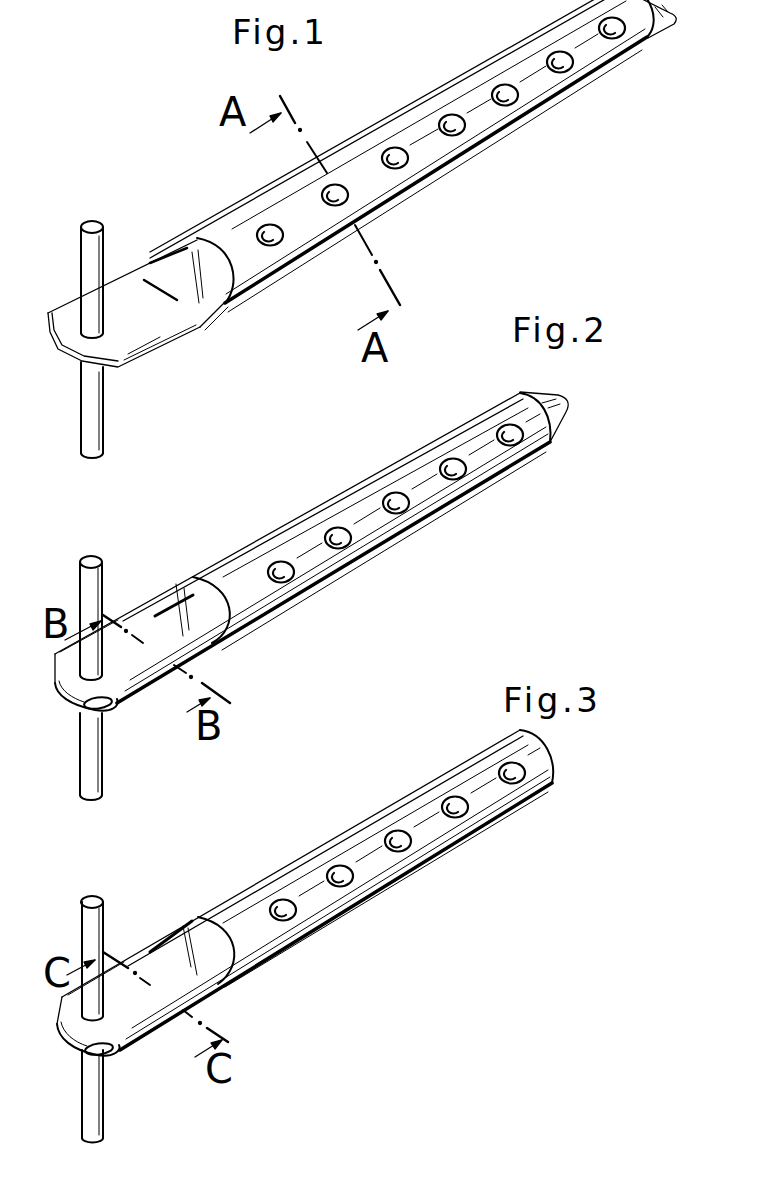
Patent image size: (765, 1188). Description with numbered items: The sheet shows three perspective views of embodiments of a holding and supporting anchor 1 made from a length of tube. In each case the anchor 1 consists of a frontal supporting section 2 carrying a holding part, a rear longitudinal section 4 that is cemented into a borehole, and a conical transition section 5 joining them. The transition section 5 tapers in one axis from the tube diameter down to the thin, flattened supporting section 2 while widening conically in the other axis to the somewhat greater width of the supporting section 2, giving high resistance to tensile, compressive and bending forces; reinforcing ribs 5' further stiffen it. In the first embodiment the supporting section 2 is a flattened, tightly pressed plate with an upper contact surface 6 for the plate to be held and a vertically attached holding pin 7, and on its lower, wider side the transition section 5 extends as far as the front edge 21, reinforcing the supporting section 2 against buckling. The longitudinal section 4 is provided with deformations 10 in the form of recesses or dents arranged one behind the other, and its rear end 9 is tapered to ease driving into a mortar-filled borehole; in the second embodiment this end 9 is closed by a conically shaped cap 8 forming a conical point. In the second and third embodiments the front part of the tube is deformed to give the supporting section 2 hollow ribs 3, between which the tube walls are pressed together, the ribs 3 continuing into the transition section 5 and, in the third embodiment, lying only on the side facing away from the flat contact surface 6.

In FIG. 1, the anchor 1 is at (353, 122).
In FIG. 2, the anchor 1 is at (333, 594).
In FIG. 3, the anchor 1 is at (317, 938).
In FIG. 1, the supporting section 2 is at (128, 295).
In FIG. 2, the supporting section 2 is at (53, 657).
In FIG. 3, the supporting section 2 is at (58, 998).
In FIG. 2, the hollow ribs 3 is at (62, 663).
In FIG. 3, the hollow ribs 3 is at (118, 1056).
In FIG. 1, the longitudinal section 4 is at (418, 160).
In FIG. 2, the longitudinal section 4 is at (395, 530).
In FIG. 3, the longitudinal section 4 is at (383, 876).
In FIG. 1, the conical transition section 5 is at (216, 308).
In FIG. 2, the conical transition section 5 is at (230, 635).
In FIG. 3, the conical transition section 5 is at (236, 980).
In FIG. 1, the reinforcing ribs 5' is at (173, 236).
In FIG. 2, the reinforcing ribs 5' is at (174, 585).
In FIG. 3, the reinforcing ribs 5' is at (173, 927).
In FIG. 1, the contact surface 6 is at (143, 318).
In FIG. 1, the holding pin 7 is at (93, 222).
In FIG. 2, the holding pin 7 is at (87, 580).
In FIG. 3, the holding pin 7 is at (90, 920).
In FIG. 2, the conically shaped cap 8 is at (573, 407).
In FIG. 1, the tapered rear end 9 is at (656, 68).
In FIG. 2, the tapered rear end 9 is at (563, 452).
In FIG. 1, the deformations 10 is at (503, 84).
In FIG. 2, the deformations 10 is at (333, 527).
In FIG. 3, the deformations 10 is at (335, 872).
In FIG. 1, the front edge 21 is at (62, 353).